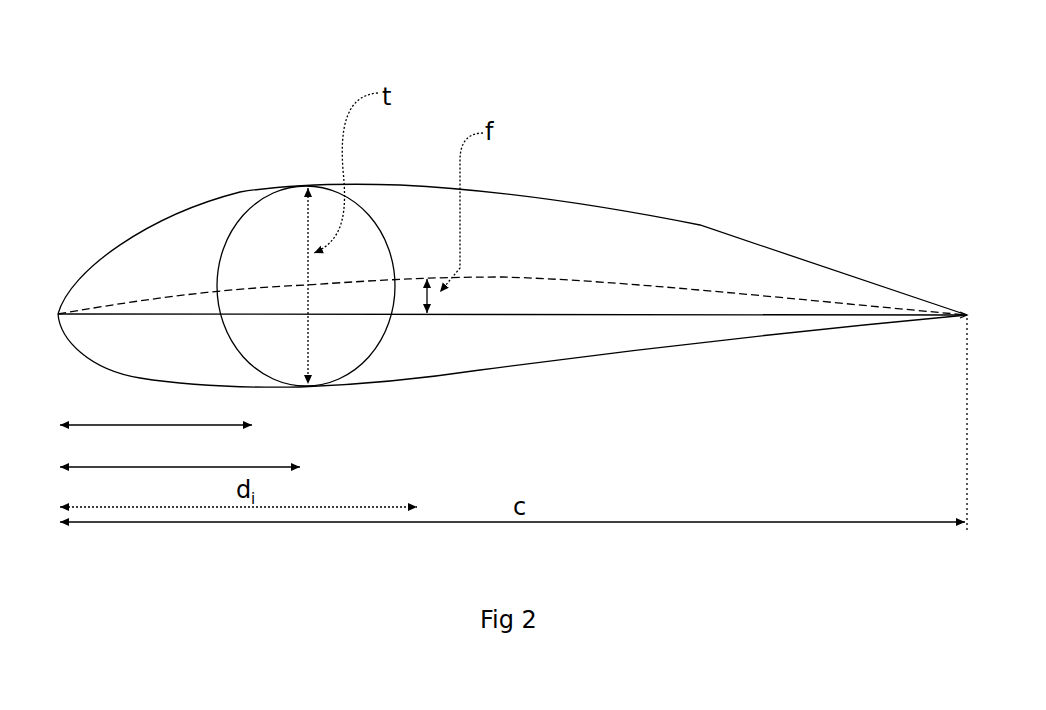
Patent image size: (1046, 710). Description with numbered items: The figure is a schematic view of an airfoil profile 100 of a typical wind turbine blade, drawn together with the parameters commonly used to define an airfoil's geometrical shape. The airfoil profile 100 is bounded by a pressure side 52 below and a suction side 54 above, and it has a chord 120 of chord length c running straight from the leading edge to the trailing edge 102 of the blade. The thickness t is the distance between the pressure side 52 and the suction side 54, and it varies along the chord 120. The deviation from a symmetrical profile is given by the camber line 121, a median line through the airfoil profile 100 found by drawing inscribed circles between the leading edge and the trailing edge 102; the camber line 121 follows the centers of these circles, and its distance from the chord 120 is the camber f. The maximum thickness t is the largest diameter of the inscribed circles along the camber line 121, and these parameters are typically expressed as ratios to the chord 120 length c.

The airfoil profile 100 is at (512, 230).
The trailing edge 102 is at (967, 310).
The chord 120 is at (738, 310).
The camber line 121 is at (502, 277).
The suction side 54 is at (627, 205).
The pressure side 52 is at (692, 340).